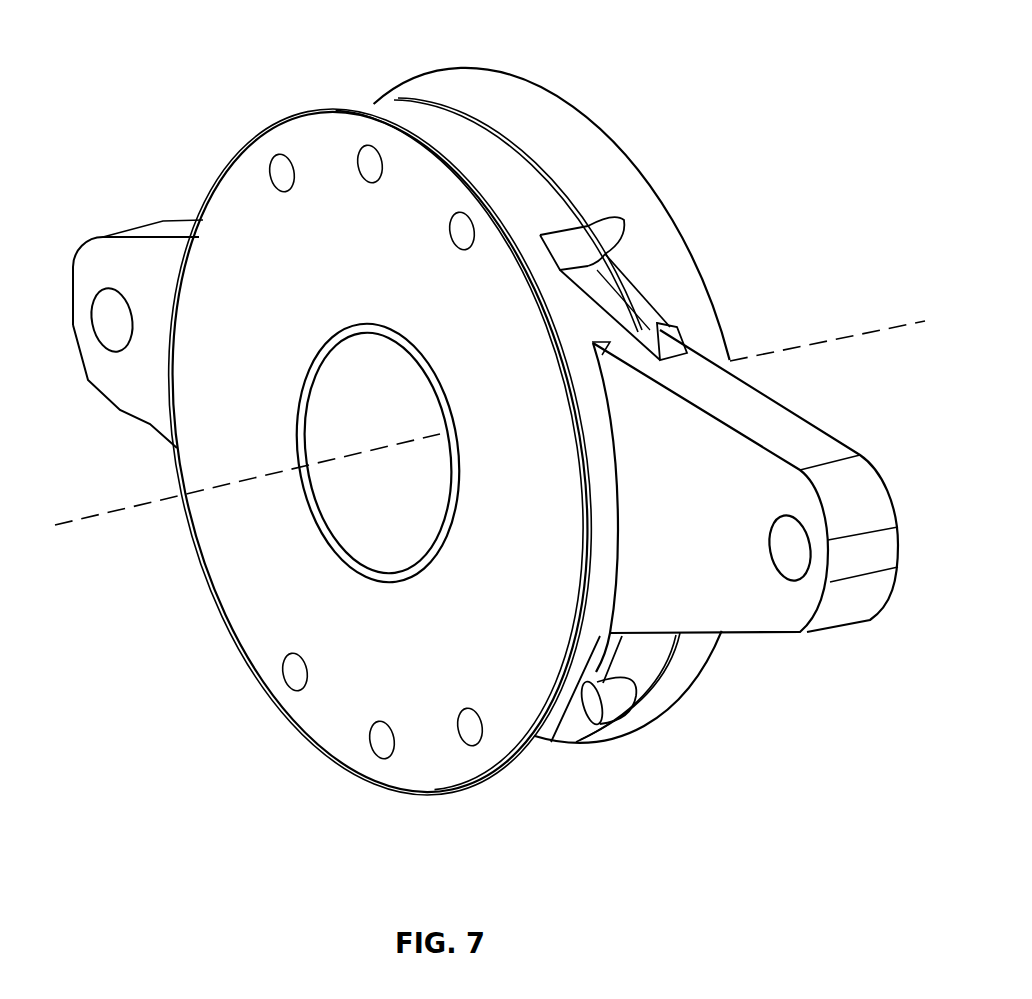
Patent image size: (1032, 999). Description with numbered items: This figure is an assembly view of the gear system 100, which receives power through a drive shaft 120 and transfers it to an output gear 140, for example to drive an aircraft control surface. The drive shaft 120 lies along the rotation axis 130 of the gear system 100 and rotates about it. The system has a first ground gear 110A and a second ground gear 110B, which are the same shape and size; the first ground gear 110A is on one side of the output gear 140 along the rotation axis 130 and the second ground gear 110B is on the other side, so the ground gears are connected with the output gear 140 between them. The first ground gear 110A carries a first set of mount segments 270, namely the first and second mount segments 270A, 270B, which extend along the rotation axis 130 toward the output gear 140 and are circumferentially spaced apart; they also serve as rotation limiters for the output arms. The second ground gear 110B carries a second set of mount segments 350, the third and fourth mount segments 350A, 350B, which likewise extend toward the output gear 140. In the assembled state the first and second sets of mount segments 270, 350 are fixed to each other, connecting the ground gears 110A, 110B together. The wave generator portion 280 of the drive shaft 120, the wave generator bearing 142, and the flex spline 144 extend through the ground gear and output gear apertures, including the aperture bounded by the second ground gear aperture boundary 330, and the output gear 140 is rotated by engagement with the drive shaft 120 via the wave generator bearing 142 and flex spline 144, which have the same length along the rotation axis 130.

The gear system 100 is at (106, 129).
The first ground gear 110A is at (637, 160).
The second ground gear 110B is at (202, 394).
The drive shaft 120 is at (333, 385).
The rotation axis 130 is at (118, 510).
The output gear 140 is at (795, 412).
The wave generator bearing 142 is at (352, 556).
The flex spline 144 is at (387, 583).
The first set of mount segments 270 is at (478, 80).
The first mount segment 270A is at (552, 118).
The second mount segment 270B is at (615, 703).
The wave generator portion 280 is at (348, 497).
The second ground gear aperture boundary 330 is at (530, 540).
The second set of mount segments 350 is at (403, 113).
The third mount segment 350A is at (400, 97).
The fourth mount segment 350B is at (517, 767).